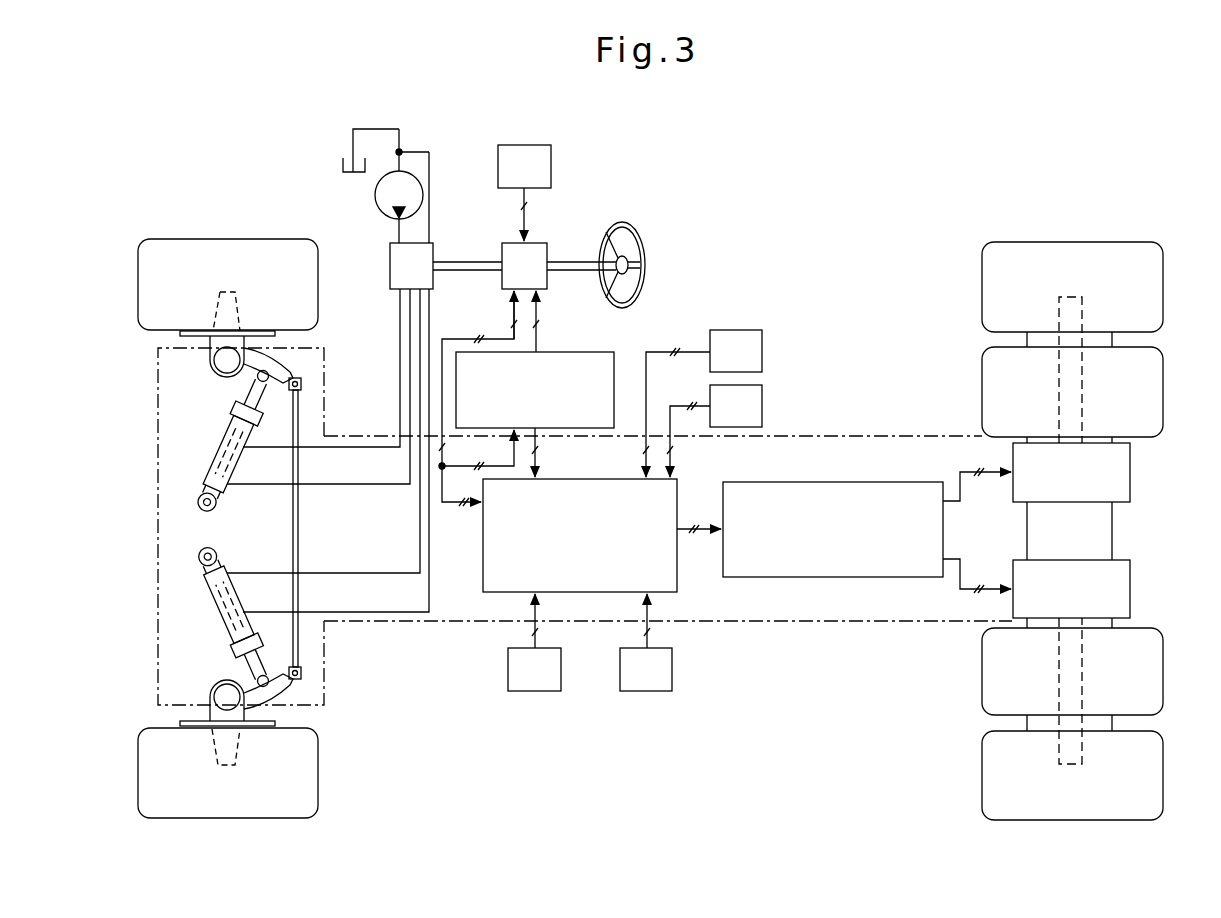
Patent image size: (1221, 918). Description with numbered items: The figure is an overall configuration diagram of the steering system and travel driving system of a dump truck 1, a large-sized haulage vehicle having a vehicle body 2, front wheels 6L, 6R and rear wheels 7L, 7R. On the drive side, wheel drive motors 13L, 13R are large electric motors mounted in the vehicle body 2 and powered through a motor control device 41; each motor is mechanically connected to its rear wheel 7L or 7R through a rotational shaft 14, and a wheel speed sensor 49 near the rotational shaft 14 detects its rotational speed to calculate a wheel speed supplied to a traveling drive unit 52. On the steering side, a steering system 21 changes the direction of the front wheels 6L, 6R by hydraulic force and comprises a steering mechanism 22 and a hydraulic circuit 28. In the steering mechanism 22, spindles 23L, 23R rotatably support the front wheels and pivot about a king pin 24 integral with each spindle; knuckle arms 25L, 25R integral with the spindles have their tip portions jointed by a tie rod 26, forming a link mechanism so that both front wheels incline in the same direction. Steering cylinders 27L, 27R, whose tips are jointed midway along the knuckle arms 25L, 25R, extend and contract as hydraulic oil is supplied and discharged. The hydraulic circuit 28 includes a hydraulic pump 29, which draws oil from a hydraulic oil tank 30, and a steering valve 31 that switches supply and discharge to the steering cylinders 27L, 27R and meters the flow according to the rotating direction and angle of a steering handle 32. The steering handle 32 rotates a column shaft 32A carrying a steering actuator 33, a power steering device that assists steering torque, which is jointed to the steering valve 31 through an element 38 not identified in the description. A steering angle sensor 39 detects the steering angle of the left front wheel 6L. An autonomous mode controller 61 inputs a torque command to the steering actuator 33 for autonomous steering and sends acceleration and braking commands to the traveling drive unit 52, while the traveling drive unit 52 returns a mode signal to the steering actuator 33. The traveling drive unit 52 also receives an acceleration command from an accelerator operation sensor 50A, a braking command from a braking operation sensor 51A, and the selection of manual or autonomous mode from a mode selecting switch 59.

The dump truck 1 is at (873, 263).
The vehicle body 2 is at (778, 622).
The right front wheel 6R is at (211, 254).
The left front wheel 6L is at (226, 808).
The right rear wheel 7R is at (1067, 255).
The left rear wheel 7L is at (1067, 808).
The right wheel drive motor 13R is at (1122, 472).
The left wheel drive motor 13L is at (1122, 590).
The rotational shaft 14 is at (1082, 398).
The steering system 21 is at (443, 180).
The steering mechanism 22 is at (178, 436).
The right spindle 23R is at (210, 343).
The left spindle 23L is at (215, 714).
The king pin 24 is at (220, 367).
The right knuckle arm 25R is at (283, 374).
The left knuckle arm 25L is at (253, 697).
The tie rod 26 is at (298, 528).
The right steering cylinder 27R is at (205, 479).
The left steering cylinder 27L is at (205, 583).
The hydraulic circuit 28 is at (353, 197).
The hydraulic pump 29 is at (377, 197).
The hydraulic oil tank 30 is at (343, 165).
The steering valve 31 is at (389, 274).
The steering handle 32 is at (640, 236).
The column shaft 32A is at (571, 261).
The steering actuator 33 is at (498, 280).
The steering input shaft 38 is at (469, 261).
The steering angle sensor 39 is at (523, 140).
The motor control device 41 is at (833, 577).
The wheel speed sensor 49 is at (645, 691).
The accelerator operation sensor 50A is at (762, 350).
The braking operation sensor 51A is at (762, 405).
The traveling drive unit 52 is at (483, 553).
The mode selecting switch 59 is at (533, 691).
The autonomous mode controller 61 is at (596, 352).